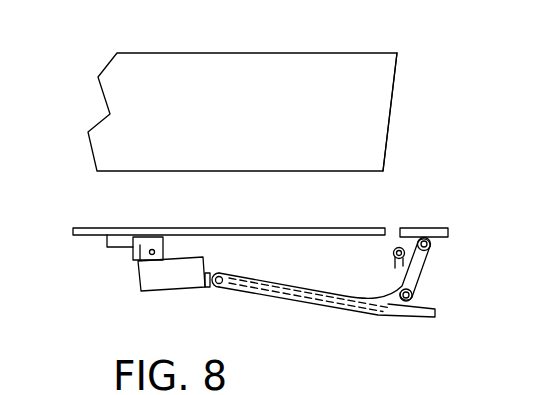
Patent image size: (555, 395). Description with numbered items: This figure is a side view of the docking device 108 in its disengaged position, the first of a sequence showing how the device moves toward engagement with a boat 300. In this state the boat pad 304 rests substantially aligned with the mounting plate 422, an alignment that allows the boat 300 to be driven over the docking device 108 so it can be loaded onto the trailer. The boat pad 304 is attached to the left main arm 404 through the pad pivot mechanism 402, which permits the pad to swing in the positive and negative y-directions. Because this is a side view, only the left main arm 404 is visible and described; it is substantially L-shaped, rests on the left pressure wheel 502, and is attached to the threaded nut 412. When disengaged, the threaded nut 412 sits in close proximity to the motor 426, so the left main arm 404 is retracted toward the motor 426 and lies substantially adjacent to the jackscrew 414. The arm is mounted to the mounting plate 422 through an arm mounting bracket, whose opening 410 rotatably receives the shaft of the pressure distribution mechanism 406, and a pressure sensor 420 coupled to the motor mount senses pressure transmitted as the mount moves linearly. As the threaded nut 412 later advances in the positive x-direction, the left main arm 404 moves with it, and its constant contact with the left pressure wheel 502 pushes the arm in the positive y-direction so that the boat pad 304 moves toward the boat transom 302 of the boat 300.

The boat 300 is at (233, 71).
The boat transom 302 is at (394, 81).
The docking device 108 is at (423, 193).
The boat pad 304 is at (440, 228).
The pad pivot mechanism 402 is at (431, 243).
The left main arm 404 is at (416, 263).
The pressure distribution mechanism 406 is at (394, 256).
The arm mounting bracket opening 410 is at (137, 255).
The threaded nut 412 is at (213, 290).
The jackscrew 414 is at (393, 306).
The pressure sensor 420 is at (107, 241).
The mounting plate 422 is at (91, 226).
The motor 426 is at (180, 277).
The left pressure wheel 502 is at (414, 296).